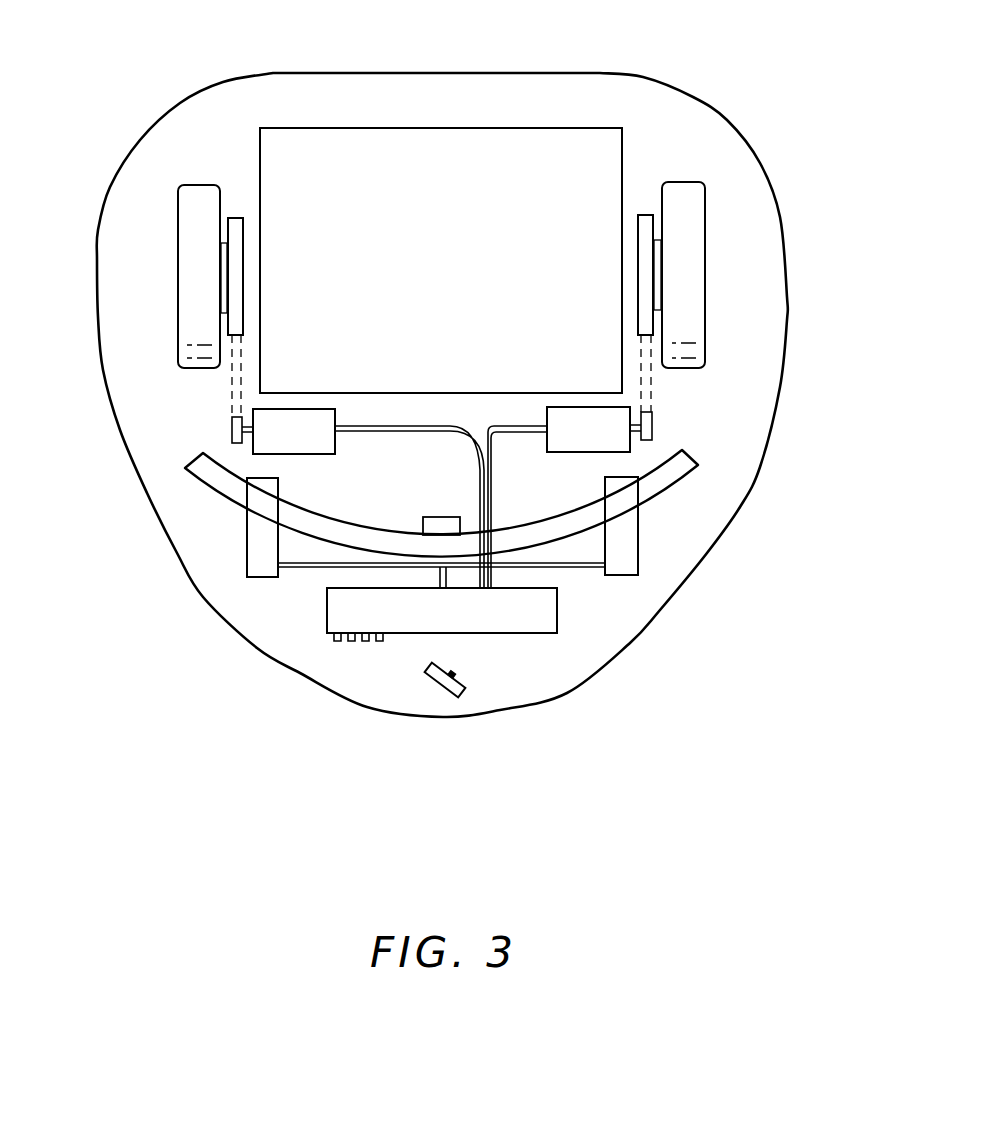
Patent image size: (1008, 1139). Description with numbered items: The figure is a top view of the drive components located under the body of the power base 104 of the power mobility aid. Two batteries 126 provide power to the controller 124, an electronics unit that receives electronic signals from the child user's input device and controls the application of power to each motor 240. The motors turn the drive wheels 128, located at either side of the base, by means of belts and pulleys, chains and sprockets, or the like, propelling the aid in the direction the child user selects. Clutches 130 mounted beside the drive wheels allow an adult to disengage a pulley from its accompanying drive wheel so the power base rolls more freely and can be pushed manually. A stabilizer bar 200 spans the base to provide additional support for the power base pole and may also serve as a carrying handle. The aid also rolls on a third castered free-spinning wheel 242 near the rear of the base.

The power base 104 is at (720, 84).
The drive wheels 128 is at (187, 227).
The clutches 130 is at (223, 285).
The motor 240 is at (300, 412).
The stabilizer bar 200 is at (678, 468).
The battery 126 is at (257, 537).
The controller 124 is at (535, 622).
The castered free-spinning wheel 242 is at (437, 683).